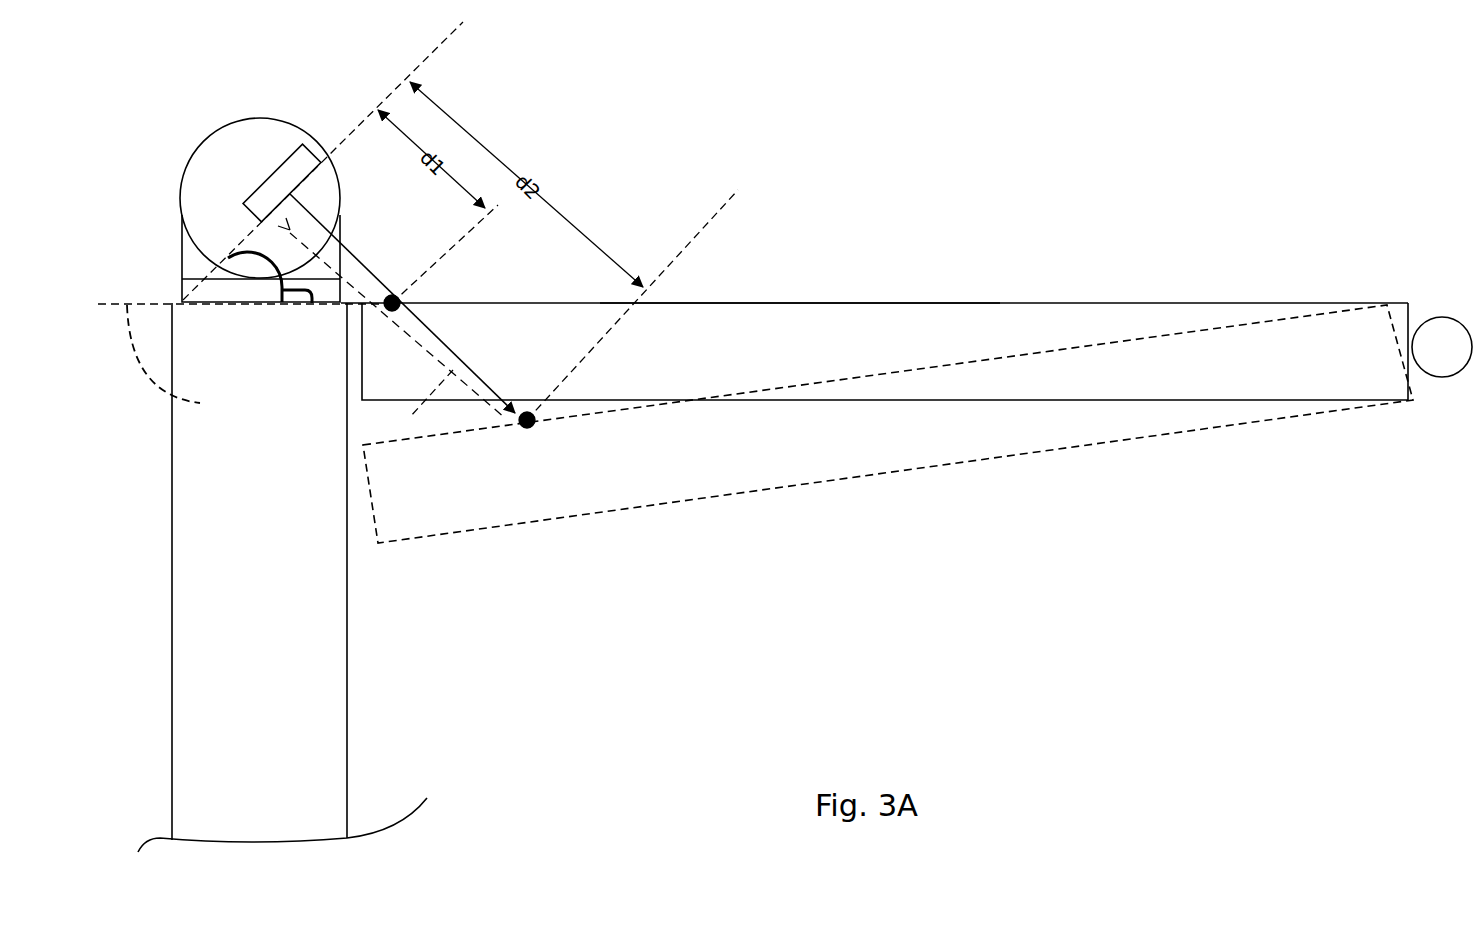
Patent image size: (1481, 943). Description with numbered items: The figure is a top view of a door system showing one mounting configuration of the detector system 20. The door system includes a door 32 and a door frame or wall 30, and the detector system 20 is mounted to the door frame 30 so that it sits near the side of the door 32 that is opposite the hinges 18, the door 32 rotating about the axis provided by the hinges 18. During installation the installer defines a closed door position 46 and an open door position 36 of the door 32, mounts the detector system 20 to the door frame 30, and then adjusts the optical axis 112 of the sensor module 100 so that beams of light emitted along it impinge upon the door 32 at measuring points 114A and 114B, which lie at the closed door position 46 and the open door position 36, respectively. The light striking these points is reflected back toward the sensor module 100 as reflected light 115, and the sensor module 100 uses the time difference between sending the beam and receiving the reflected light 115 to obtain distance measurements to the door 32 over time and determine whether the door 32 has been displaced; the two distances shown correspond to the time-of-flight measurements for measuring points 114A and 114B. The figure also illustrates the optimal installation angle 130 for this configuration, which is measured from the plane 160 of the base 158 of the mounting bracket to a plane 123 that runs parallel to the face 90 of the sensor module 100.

The hinges 18 is at (1432, 328).
The detector system 20 is at (172, 110).
The door frame or wall 30 is at (282, 577).
The door 32 is at (874, 351).
The open door position 36 is at (878, 484).
The closed door position 46 is at (782, 290).
The face of the sensor module 90 is at (339, 214).
The sensor module 100 is at (240, 197).
The optical axis 112 is at (440, 340).
The measuring point 114A is at (434, 258).
The measuring point 114B is at (610, 326).
The reflected light 115 is at (403, 418).
The plane 123 is at (438, 48).
The installation angle 130 is at (312, 303).
The base 158 is at (188, 290).
The plane of the base 160 is at (182, 361).